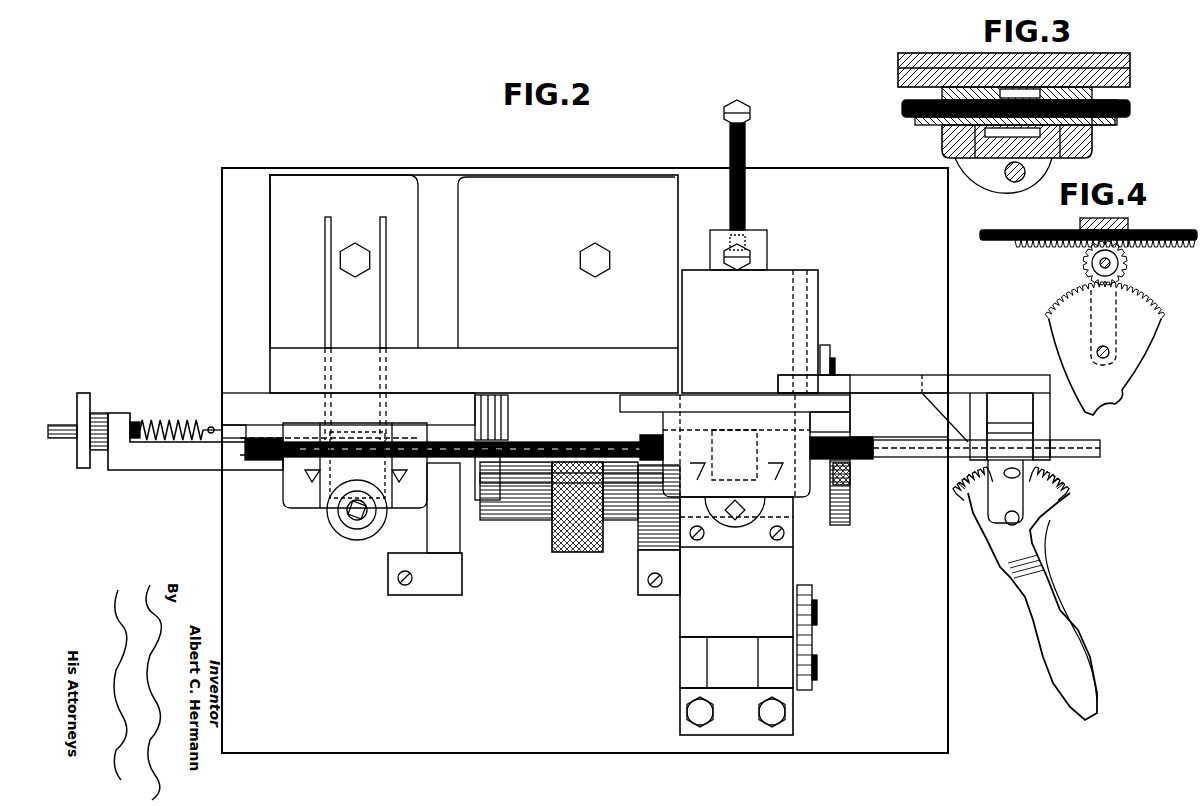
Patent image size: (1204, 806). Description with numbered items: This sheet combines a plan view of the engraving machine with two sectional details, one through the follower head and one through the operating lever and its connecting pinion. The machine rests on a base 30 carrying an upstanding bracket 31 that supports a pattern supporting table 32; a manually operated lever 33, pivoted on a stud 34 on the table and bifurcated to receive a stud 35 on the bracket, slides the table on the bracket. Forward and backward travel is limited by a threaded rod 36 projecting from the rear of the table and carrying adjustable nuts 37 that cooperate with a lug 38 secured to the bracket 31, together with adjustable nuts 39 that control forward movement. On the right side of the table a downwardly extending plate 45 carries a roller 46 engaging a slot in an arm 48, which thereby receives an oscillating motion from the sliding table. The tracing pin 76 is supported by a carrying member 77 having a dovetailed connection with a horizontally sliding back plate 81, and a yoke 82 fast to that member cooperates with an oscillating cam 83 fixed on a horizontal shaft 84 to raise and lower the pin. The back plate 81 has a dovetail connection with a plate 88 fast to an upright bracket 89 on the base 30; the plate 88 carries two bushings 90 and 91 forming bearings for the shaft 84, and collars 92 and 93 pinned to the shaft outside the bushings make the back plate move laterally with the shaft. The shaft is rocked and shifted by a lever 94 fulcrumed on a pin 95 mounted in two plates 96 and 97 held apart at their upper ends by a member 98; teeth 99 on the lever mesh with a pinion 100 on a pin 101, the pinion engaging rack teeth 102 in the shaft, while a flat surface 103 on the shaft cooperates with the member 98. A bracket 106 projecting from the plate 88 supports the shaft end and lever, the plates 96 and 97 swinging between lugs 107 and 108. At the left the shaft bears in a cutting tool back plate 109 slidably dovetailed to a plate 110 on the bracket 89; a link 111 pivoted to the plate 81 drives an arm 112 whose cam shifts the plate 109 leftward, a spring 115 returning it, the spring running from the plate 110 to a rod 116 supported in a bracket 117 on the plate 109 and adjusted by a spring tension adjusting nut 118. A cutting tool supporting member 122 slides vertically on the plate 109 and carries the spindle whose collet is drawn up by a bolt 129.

In FIG. 2, the base 30 is at (558, 748).
In FIG. 2, the upstanding bracket 31 is at (682, 658).
In FIG. 2, the pattern supporting table 32 is at (780, 570).
In FIG. 2, the manually operated lever 33 is at (813, 634).
In FIG. 2, the stud 34 is at (812, 606).
In FIG. 2, the stud 35 is at (814, 660).
In FIG. 2, the threaded rod 36 is at (730, 197).
In FIG. 2, the adjustable nuts 37 is at (724, 252).
In FIG. 2, the lug 38 is at (720, 228).
In FIG. 2, the adjustable nuts 39 is at (722, 118).
In FIG. 2, the plate 45 is at (815, 288).
In FIG. 2, the roller 46 is at (833, 364).
In FIG. 2, the arm 48 is at (828, 348).
In FIG. 3, the tracing pin 76 is at (1008, 180).
In FIG. 2, the carrying member 77 is at (640, 512).
In FIG. 3, the carrying member 77 is at (1092, 140).
In FIG. 2, the horizontally sliding back plate 81 is at (700, 412).
In FIG. 3, the horizontally sliding back plate 81 is at (980, 140).
In FIG. 3, the yoke 82 is at (1000, 140).
In FIG. 3, the oscillating cam 83 is at (1035, 92).
In FIG. 2, the horizontal shaft 84 is at (886, 456).
In FIG. 3, the horizontal shaft 84 is at (905, 108).
In FIG. 4, the horizontal shaft 84 is at (985, 246).
In FIG. 2, the plate 88 is at (756, 410).
In FIG. 2, the upright bracket 89 is at (275, 356).
In FIG. 3, the bushing 90 is at (1095, 90).
In FIG. 3, the bushing 91 is at (935, 92).
In FIG. 3, the collar 92 is at (1115, 122).
In FIG. 3, the collar 93 is at (915, 122).
In FIG. 2, the lever 94 is at (1000, 552).
In FIG. 4, the lever 94 is at (1122, 350).
In FIG. 2, the pin 95 is at (1004, 521).
In FIG. 2, the plate 96 is at (1013, 492).
In FIG. 4, the plate 97 is at (1125, 262).
In FIG. 2, the member 98 is at (1020, 437).
In FIG. 4, the member 98 is at (1128, 226).
In FIG. 2, the teeth 99 is at (1068, 486).
In FIG. 4, the teeth 99 is at (1140, 298).
In FIG. 4, the pinion 100 is at (1092, 268).
In FIG. 4, the pin 101 is at (1100, 262).
In FIG. 4, the rack teeth 102 is at (1178, 246).
In FIG. 2, the flat surface 103 is at (1075, 452).
In FIG. 2, the bracket 106 is at (1005, 395).
In FIG. 2, the lug 107 is at (975, 410).
In FIG. 2, the lug 108 is at (1045, 398).
In FIG. 2, the cutting tool back plate 109 is at (290, 428).
In FIG. 2, the plate 110 is at (410, 412).
In FIG. 2, the link 111 is at (545, 500).
In FIG. 2, the arm 112 is at (447, 520).
In FIG. 2, the spring 115 is at (175, 420).
In FIG. 2, the rod 116 is at (138, 420).
In FIG. 2, the bracket 117 is at (170, 456).
In FIG. 2, the spring tension adjusting nut 118 is at (88, 400).
In FIG. 2, the cutting tool supporting member 122 is at (300, 505).
In FIG. 2, the bolt 129 is at (350, 522).